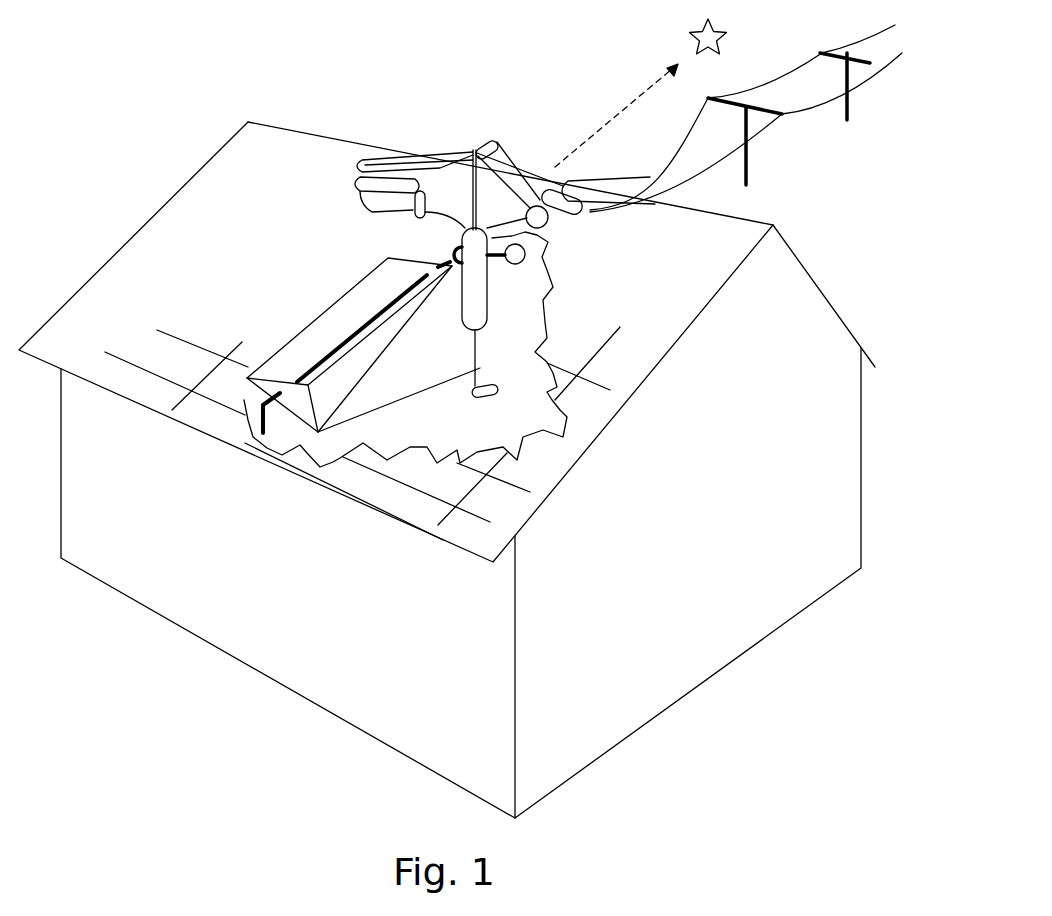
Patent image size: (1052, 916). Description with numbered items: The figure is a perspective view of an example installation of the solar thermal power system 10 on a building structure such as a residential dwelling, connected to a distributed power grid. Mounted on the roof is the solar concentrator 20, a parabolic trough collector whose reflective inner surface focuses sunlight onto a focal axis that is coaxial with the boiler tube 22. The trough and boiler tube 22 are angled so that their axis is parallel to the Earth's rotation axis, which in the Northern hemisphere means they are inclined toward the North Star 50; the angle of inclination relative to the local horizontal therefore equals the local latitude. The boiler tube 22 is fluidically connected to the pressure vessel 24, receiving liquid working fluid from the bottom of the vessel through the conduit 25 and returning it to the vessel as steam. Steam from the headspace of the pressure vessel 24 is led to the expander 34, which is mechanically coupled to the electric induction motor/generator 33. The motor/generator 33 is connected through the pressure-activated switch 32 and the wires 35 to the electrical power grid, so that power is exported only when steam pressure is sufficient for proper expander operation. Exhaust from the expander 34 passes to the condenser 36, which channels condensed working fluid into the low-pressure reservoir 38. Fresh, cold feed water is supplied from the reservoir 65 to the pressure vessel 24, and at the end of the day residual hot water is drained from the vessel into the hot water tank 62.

The solar thermal power system 10 is at (398, 106).
The solar concentrator 20 is at (307, 322).
The boiler tube 22 is at (340, 303).
The pressure vessel 24 is at (484, 296).
The conduit 25 is at (410, 392).
The pressure-activated switch 32 is at (540, 228).
The electric induction motor/generator 33 is at (617, 178).
The expander 34 is at (481, 129).
The wires 35 is at (803, 115).
The condenser 36 is at (350, 177).
The reservoir 38 is at (414, 208).
The North Star 50 is at (688, 33).
The hot water tank 62 is at (491, 401).
The reservoir 65 is at (514, 265).